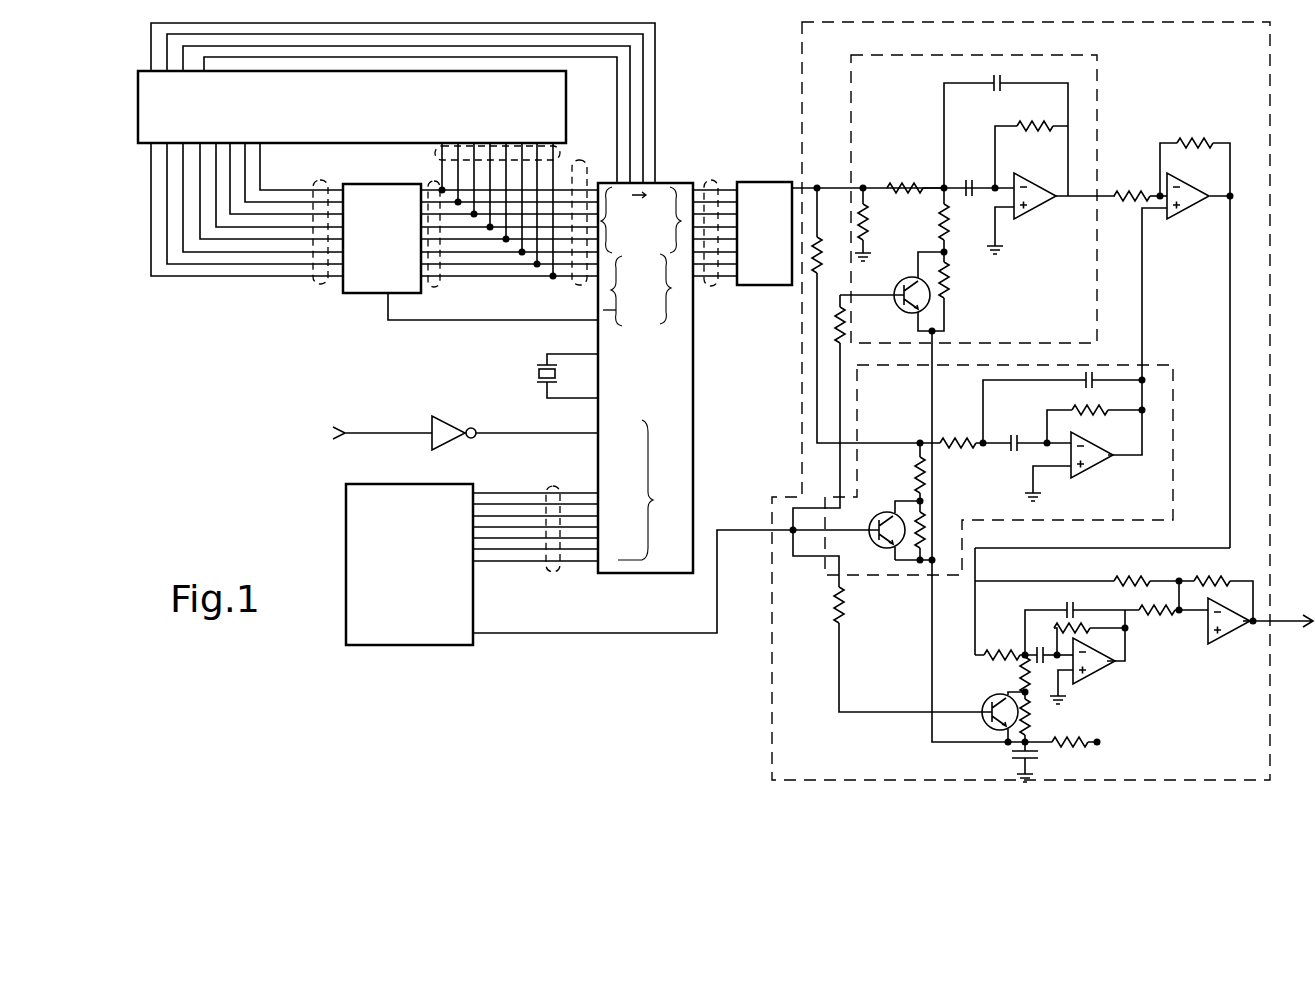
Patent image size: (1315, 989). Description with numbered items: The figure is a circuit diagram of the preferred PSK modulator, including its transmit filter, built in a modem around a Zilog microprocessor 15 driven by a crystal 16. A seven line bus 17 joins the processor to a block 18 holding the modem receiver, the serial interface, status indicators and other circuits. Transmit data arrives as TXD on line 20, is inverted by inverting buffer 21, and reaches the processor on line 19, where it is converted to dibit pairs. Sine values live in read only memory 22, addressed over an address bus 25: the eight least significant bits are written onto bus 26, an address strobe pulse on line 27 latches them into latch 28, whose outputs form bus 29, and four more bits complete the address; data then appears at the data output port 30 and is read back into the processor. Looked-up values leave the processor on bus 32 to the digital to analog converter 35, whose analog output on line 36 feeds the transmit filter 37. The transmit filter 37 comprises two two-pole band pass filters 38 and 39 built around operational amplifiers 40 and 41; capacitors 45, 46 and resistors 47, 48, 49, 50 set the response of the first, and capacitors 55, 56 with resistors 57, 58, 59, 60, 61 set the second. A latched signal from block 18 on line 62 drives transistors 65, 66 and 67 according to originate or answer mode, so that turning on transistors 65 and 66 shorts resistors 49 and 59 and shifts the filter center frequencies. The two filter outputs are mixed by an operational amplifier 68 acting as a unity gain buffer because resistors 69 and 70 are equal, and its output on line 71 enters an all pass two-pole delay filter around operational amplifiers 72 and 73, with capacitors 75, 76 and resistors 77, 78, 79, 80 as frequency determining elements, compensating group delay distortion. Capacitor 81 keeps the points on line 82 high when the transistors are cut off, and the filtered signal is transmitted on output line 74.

The microprocessor 15 is at (694, 471).
The crystal 16 is at (540, 384).
The seven line bus 17 is at (553, 572).
The block 18 is at (346, 518).
The line 19 is at (574, 433).
The line TXD 20 is at (370, 432).
The inverting buffer 21 is at (466, 423).
The read only memory 22 is at (138, 95).
The address bus 25 is at (658, 163).
The bus 26 is at (433, 284).
The line 27 is at (426, 322).
The latch 28 is at (376, 295).
The bus 29 is at (318, 283).
The data output port 30 is at (435, 153).
The bus 32 is at (712, 182).
The digital to analog converter 35 is at (782, 182).
The line 36 is at (800, 186).
The transmit filter 37 is at (1190, 40).
The band pass filter 38 is at (1087, 98).
The band pass filter 39 is at (1154, 365).
The operational amplifier 40 is at (1040, 210).
The operational amplifier 41 is at (1092, 458).
The capacitor 45 is at (1000, 84).
The capacitor 46 is at (966, 182).
The resistor 47 is at (1051, 120).
The resistor 48 is at (946, 212).
The resistor 49 is at (948, 280).
The resistor 50 is at (920, 179).
The capacitor 55 is at (1092, 382).
The capacitor 56 is at (1014, 442).
The resistor 57 is at (1094, 412).
The resistor 58 is at (926, 476).
The resistor 59 is at (930, 528).
The resistor 60 is at (820, 260).
The resistor 61 is at (968, 440).
The line 62 is at (662, 636).
The transistor 65 is at (900, 280).
The transistor 66 is at (858, 518).
The transistor 67 is at (984, 702).
The operational amplifier 68 is at (1204, 192).
The resistor 69 is at (1194, 142).
The resistor 70 is at (1136, 188).
The line 71 is at (1084, 558).
The operational amplifier 72 is at (1092, 666).
The operational amplifier 73 is at (1224, 640).
The output line 74 is at (1272, 612).
The capacitor 75 is at (1066, 610).
The capacitor 76 is at (1052, 650).
The resistor 77 is at (1080, 626).
The resistor 78 is at (1018, 674).
The resistor 79 is at (1028, 710).
The resistor 80 is at (1012, 644).
The capacitor 81 is at (1008, 756).
The line 82 is at (944, 742).